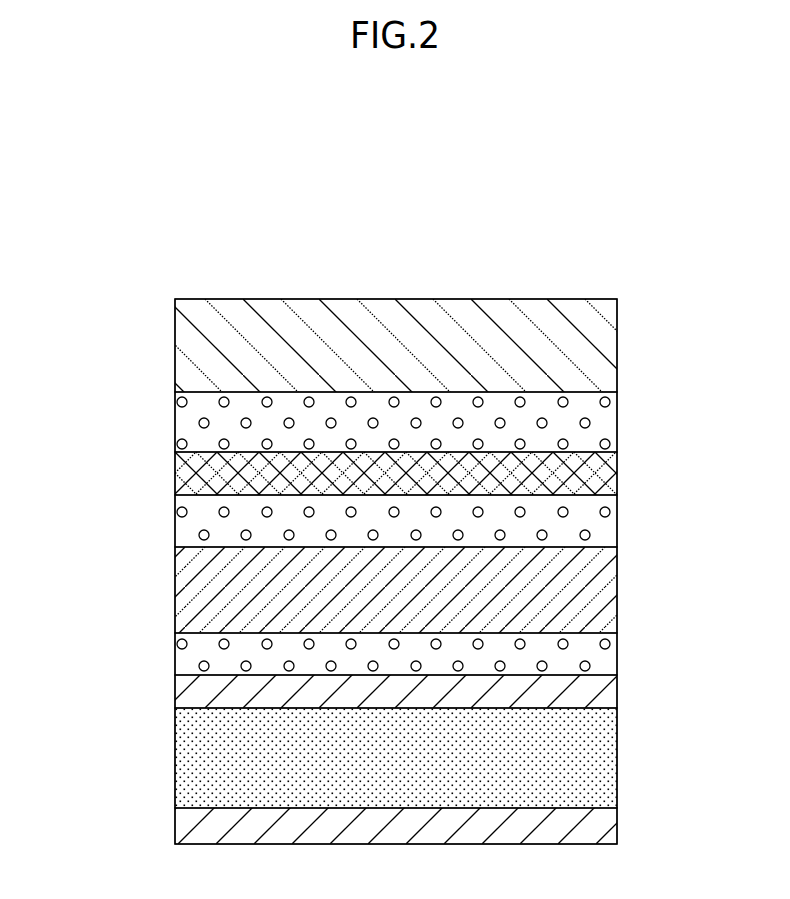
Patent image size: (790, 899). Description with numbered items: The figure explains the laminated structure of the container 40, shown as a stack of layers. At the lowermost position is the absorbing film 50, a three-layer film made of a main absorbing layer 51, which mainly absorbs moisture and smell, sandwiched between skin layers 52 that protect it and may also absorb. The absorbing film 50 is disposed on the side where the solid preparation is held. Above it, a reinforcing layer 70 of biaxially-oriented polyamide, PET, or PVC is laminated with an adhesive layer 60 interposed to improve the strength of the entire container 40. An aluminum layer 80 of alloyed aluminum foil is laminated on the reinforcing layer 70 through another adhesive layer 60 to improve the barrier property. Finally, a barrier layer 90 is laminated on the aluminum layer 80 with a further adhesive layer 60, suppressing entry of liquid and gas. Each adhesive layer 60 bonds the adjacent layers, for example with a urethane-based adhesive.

The container 40 is at (633, 198).
The absorbing film 50 is at (117, 662).
The main absorbing layer 51 is at (180, 762).
The skin layers 52 is at (180, 695).
The adhesive layer 60 is at (608, 423).
The reinforcing layer 70 is at (180, 592).
The aluminum layer 80 is at (180, 477).
The barrier layer 90 is at (180, 343).